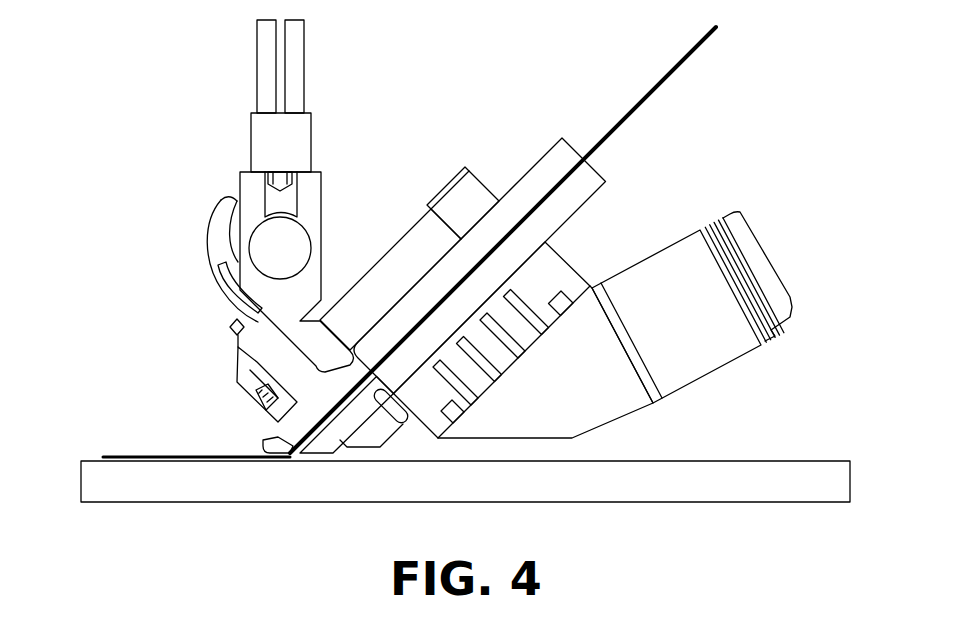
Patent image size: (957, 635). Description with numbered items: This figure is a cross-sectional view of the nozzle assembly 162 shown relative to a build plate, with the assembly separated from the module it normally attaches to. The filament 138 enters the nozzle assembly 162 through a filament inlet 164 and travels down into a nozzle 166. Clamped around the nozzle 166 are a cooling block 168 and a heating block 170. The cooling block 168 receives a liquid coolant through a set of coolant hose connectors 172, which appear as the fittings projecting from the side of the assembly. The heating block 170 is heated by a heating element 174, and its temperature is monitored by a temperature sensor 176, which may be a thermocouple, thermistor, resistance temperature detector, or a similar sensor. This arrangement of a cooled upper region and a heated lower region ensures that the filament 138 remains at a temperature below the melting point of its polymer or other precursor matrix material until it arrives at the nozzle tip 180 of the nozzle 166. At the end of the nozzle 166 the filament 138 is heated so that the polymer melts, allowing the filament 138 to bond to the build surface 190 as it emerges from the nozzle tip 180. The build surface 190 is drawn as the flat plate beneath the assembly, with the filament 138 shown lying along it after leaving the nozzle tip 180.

The filament 138 is at (665, 78).
The nozzle assembly 162 is at (456, 66).
The filament inlet 164 is at (542, 175).
The nozzle 166 is at (418, 288).
The cooling block 168 is at (540, 283).
The heating block 170 is at (370, 440).
The coolant hose connectors 172 is at (723, 343).
The heating element 174 is at (272, 247).
The temperature sensor 176 is at (260, 338).
The nozzle tip 180 is at (278, 437).
The build surface 190 is at (655, 487).